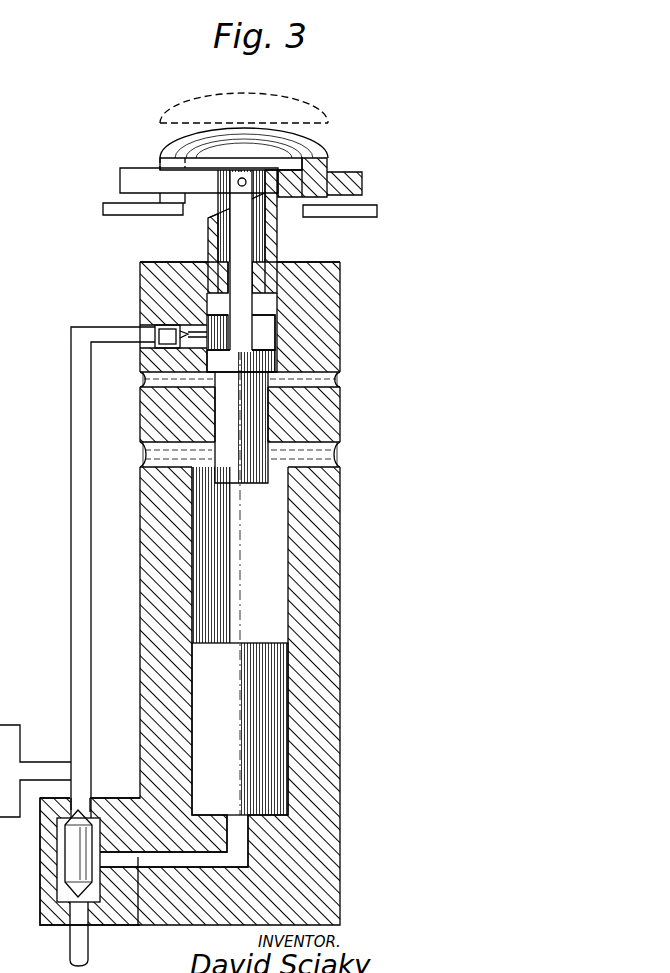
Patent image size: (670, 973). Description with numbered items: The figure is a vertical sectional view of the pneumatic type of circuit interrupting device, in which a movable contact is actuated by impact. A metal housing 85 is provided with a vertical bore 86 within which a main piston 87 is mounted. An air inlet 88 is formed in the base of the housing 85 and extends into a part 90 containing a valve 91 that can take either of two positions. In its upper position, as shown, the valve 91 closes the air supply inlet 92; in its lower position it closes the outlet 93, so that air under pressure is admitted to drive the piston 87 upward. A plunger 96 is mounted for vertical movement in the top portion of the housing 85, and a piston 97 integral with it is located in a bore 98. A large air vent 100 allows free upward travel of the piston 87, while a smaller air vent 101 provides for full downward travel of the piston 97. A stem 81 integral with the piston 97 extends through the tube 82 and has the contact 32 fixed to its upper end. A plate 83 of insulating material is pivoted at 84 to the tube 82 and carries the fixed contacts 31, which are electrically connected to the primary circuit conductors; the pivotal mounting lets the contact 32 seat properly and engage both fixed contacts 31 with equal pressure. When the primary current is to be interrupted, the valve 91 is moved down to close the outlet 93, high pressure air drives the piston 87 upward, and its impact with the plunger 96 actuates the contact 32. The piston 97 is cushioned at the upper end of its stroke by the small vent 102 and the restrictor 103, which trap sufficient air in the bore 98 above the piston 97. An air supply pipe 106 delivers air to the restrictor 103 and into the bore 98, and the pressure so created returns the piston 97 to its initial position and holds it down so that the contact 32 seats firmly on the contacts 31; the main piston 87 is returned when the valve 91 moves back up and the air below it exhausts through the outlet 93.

The fixed contacts 31 is at (318, 172).
The contact 32 is at (300, 150).
The stem 81 is at (238, 234).
The tube 82 is at (277, 234).
The plate 83 is at (136, 172).
The pivot 84 is at (240, 180).
The housing 85 is at (341, 672).
The vertical bore 86 is at (292, 560).
The piston 87 is at (270, 743).
The air inlet 88 is at (252, 845).
The part 90 is at (40, 892).
The valve 91 is at (75, 849).
The air supply inlet 92 is at (80, 808).
The outlet 93 is at (78, 917).
The plunger 96 is at (268, 410).
The piston 97 is at (275, 350).
The bore 98 is at (272, 327).
The large air vent 100 is at (342, 455).
The smaller air vent 101 is at (310, 376).
The small vent 102 is at (150, 275).
The restrictor 103 is at (170, 325).
The air supply pipe 106 is at (71, 646).